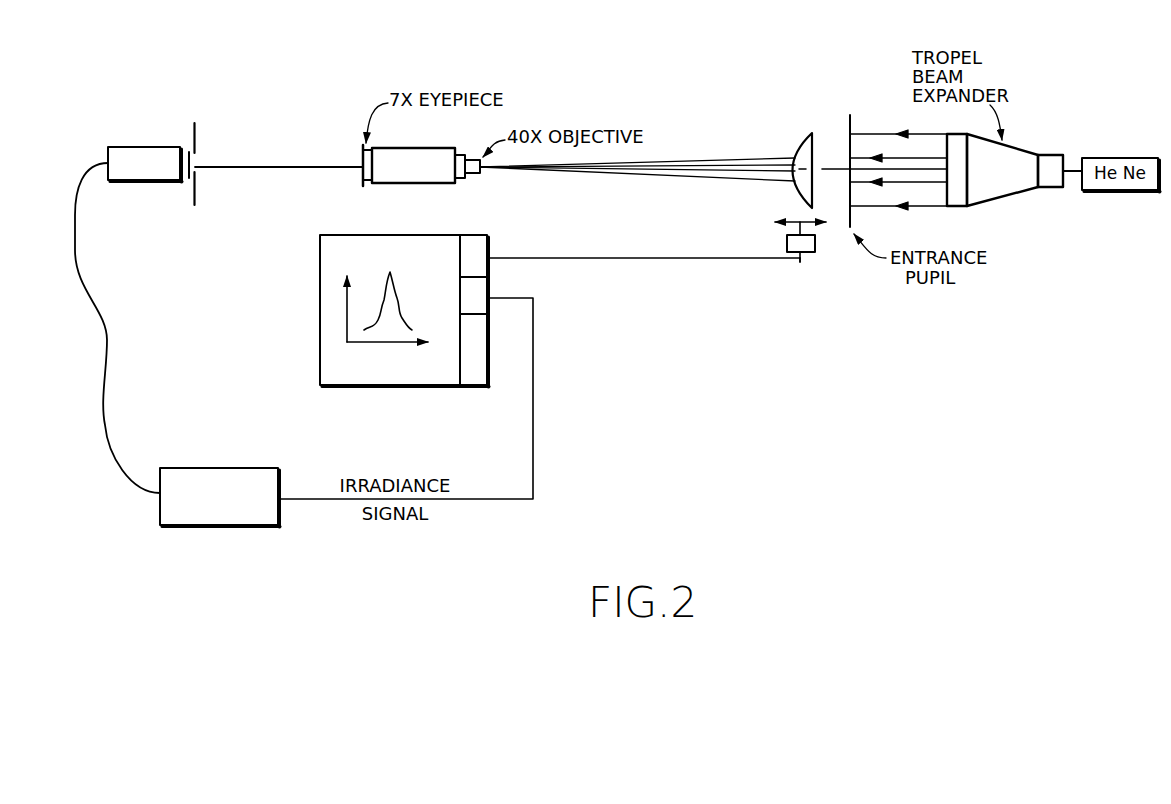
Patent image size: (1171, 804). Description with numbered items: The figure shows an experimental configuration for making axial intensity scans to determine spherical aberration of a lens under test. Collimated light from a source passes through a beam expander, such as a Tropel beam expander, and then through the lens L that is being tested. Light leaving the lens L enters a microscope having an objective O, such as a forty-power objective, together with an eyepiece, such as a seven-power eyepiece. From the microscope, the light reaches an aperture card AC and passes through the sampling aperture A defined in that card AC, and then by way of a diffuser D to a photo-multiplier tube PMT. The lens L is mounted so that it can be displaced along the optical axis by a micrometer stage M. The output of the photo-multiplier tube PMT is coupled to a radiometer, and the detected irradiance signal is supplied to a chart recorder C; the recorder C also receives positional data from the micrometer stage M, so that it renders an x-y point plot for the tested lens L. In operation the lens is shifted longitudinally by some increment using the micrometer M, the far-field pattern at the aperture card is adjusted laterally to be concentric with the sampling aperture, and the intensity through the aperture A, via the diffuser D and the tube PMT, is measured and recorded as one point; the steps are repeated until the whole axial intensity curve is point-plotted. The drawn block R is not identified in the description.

The photo-multiplier tube PMT is at (145, 164).
The aperture card AC is at (200, 131).
The aperture A is at (196, 163).
The diffuser D is at (184, 181).
The objective O is at (400, 144).
The lens L is at (797, 144).
The micrometer stage M is at (810, 252).
The chart recorder C is at (308, 313).
The recorder R is at (224, 468).